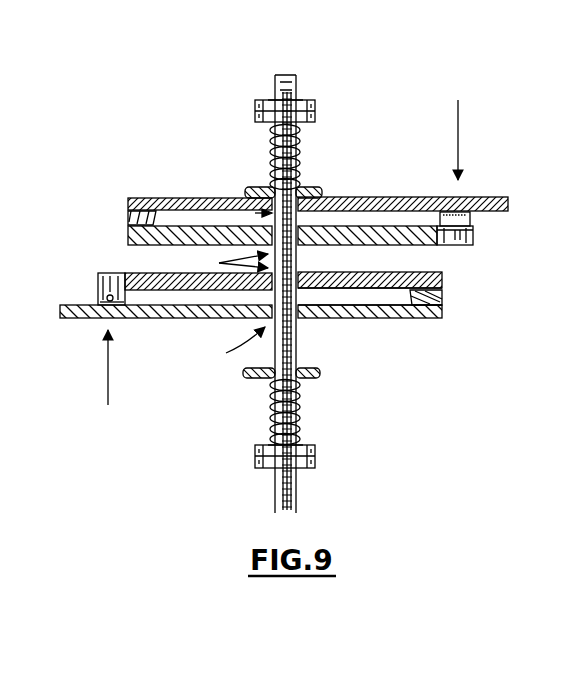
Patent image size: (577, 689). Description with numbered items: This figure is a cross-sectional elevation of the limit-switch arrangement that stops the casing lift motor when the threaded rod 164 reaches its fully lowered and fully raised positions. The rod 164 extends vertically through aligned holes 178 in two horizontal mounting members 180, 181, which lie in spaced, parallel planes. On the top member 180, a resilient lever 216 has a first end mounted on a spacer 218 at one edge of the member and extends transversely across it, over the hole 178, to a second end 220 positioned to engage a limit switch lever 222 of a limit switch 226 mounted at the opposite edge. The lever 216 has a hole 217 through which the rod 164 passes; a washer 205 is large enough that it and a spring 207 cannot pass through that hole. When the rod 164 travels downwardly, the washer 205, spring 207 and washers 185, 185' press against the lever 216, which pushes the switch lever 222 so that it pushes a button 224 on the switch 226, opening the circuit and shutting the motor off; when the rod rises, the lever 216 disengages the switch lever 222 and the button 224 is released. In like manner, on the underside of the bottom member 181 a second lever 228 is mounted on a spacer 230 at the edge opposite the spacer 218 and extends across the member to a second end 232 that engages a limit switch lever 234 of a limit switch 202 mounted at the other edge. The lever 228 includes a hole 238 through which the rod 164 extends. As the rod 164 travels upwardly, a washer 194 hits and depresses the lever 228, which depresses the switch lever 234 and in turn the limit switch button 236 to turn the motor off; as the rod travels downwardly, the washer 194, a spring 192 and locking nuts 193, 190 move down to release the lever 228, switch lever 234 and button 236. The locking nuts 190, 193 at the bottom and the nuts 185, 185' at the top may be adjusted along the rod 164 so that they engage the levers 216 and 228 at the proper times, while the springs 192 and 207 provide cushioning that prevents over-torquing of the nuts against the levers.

The threaded rod 164 is at (296, 353).
The holes 178 is at (224, 265).
The horizontal mounting member 180 is at (157, 199).
The horizontal mounting member 181 is at (260, 313).
The washer 185 is at (316, 120).
The washer 185' is at (327, 84).
The locking nut 190 is at (315, 462).
The spring 192 is at (299, 402).
The locking nut 193 is at (310, 449).
The washer 194 is at (251, 380).
The limit switch 202 is at (66, 288).
The washer 205 is at (313, 190).
The spring 207 is at (301, 165).
The resilient lever 216 is at (185, 197).
The hole 217 is at (241, 197).
The spacer 218 is at (128, 226).
The second end 220 is at (470, 197).
The limit switch lever 222 is at (472, 215).
The button 224 is at (475, 240).
The limit switch 226 is at (456, 242).
The second lever 228 is at (165, 320).
The spacer 230 is at (442, 298).
The second end 232 is at (80, 320).
The limit switch lever 234 is at (100, 303).
The limit switch button 236 is at (100, 291).
The hole 238 is at (229, 349).